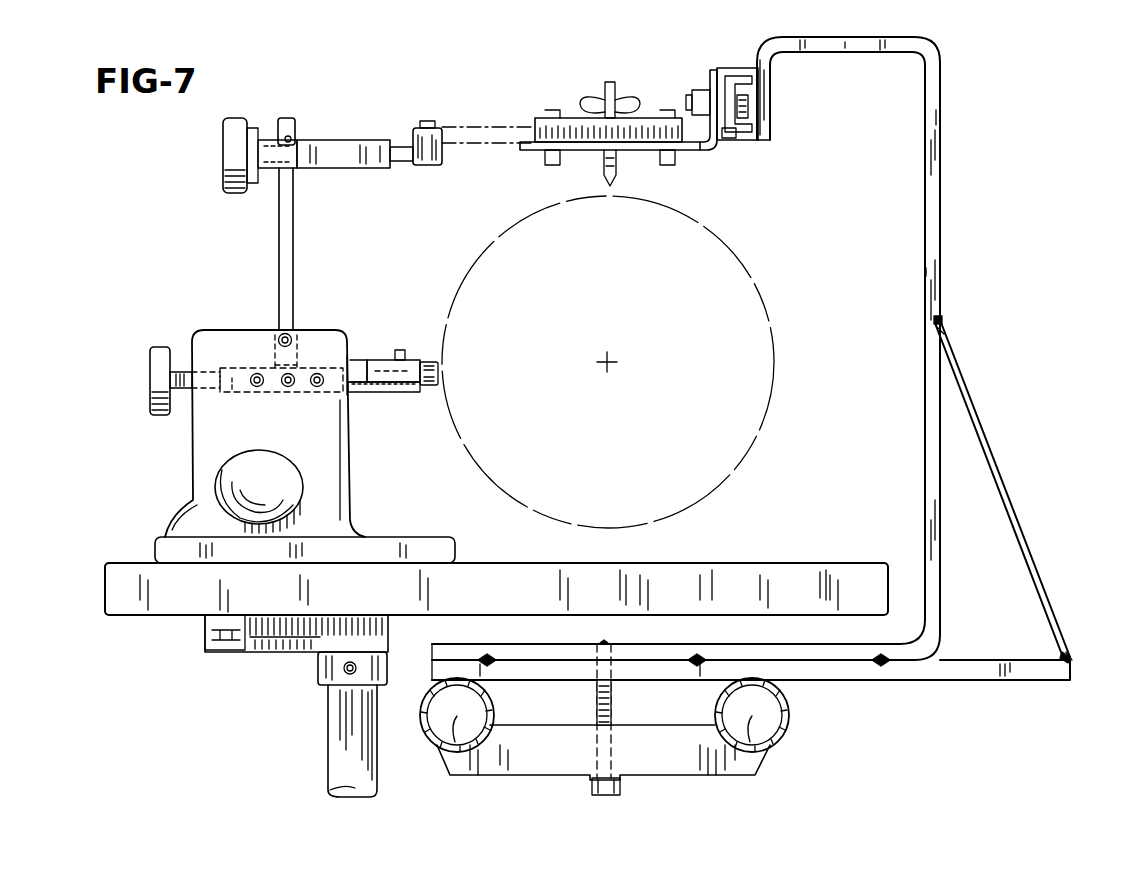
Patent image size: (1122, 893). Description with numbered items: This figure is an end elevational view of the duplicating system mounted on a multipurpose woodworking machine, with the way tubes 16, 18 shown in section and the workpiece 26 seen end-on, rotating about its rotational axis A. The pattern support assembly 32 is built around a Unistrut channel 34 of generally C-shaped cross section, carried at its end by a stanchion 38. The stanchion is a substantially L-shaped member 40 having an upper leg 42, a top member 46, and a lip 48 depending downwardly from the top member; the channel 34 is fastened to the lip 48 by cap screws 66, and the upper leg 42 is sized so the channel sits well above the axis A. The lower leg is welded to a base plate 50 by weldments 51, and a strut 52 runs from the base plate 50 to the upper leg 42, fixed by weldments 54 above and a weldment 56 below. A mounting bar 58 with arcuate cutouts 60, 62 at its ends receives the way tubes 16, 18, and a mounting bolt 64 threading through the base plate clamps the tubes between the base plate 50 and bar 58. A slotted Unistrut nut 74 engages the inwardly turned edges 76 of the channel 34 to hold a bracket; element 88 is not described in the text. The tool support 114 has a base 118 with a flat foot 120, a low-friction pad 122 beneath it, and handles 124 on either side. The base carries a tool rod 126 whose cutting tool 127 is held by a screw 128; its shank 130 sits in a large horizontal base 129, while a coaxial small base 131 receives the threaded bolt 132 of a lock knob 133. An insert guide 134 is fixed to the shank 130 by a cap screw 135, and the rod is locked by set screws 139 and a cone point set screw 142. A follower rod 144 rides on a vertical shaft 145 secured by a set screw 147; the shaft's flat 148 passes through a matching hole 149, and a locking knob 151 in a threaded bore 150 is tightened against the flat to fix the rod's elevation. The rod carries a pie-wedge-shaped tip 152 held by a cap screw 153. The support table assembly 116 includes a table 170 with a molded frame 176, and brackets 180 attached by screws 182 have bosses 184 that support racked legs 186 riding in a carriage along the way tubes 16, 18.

The way tube 16 is at (482, 700).
The way tube 18 is at (790, 712).
The workpiece 26 is at (758, 455).
The pattern support assembly 32 is at (940, 221).
The Unistrut channel 34 is at (727, 68).
The stanchion 38 is at (940, 118).
The L-shaped member 40 is at (940, 272).
The upper leg 42 is at (942, 320).
The top member 46 is at (850, 53).
The lip 48 is at (766, 122).
The base plate 50 is at (965, 668).
The weldments 51 is at (487, 656).
The strut 52 is at (1005, 460).
The weldments 54 is at (945, 332).
The weldment 56 is at (1072, 655).
The mounting bar 58 is at (755, 765).
The arcuate cutout 60 is at (752, 714).
The arcuate cutout 62 is at (457, 716).
The mounting bolt 64 is at (613, 700).
The cap screws 66 is at (750, 100).
The Unistrut nut 74 is at (738, 140).
The inwardly turned edges 76 is at (712, 72).
The bolts 88 is at (549, 165).
The tool support 114 is at (192, 450).
The support table assembly 116 is at (715, 558).
The base 118 is at (347, 425).
The foot 120 is at (405, 545).
The pad 122 is at (460, 562).
The handles 124 is at (282, 458).
The tool rod 126 is at (368, 364).
The cutting tool 127 is at (440, 372).
The screw 128 is at (438, 365).
The large horizontal base 129 is at (236, 392).
The shank 130 is at (378, 392).
The small base 131 is at (348, 355).
The threaded bolt 132 is at (188, 372).
The lock knob 133 is at (160, 347).
The insert guide 134 is at (438, 383).
The cap screw 135 is at (400, 350).
The set screws 139 is at (257, 372).
The cone point set screw 142 is at (288, 387).
The follower rod 144 is at (372, 150).
The vertical shaft 145 is at (294, 190).
The set screw 147 is at (287, 333).
The flat 148 is at (278, 125).
The hole 149 is at (292, 137).
The threaded bore 150 is at (268, 170).
The locking knob 151 is at (223, 132).
The tip 152 is at (432, 166).
The cap screw 153 is at (432, 121).
The table 170 is at (828, 560).
The frame 176 is at (625, 562).
The brackets 180 is at (264, 646).
The screws 182 is at (205, 640).
The bosses 184 is at (318, 670).
The racked legs 186 is at (328, 720).
The rotational axis A is at (610, 360).